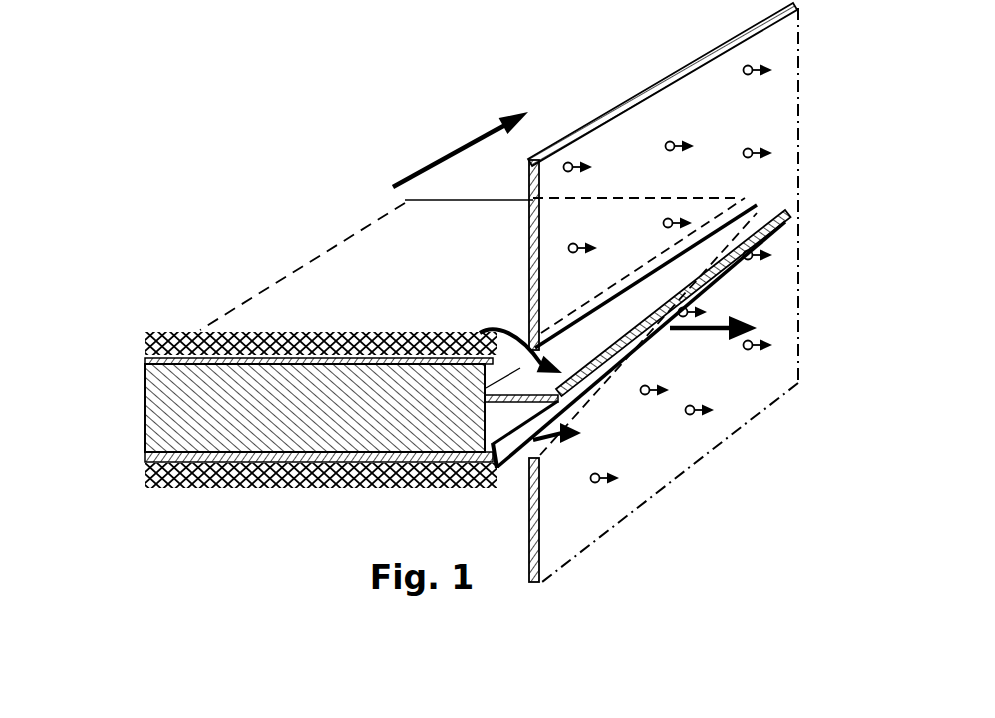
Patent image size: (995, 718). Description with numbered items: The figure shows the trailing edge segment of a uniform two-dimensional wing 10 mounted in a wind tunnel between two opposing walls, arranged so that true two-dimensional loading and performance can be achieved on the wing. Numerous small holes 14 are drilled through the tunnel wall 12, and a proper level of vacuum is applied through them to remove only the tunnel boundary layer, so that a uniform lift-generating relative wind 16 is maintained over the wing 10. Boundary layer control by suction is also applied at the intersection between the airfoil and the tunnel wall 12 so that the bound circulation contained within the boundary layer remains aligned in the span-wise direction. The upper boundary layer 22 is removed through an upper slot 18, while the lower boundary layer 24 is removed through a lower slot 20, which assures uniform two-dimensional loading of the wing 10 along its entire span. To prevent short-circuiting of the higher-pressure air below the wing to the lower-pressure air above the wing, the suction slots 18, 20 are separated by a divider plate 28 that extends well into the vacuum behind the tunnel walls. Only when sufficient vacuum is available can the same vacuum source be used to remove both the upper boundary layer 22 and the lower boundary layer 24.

The 2-D wing 10 is at (147, 397).
The tunnel wall 12 is at (666, 476).
The small holes 14 is at (728, 411).
The relative wind 16 is at (416, 170).
The upper slot 18 is at (517, 337).
The lower slot 20 is at (522, 487).
The upper boundary layer 22 is at (147, 352).
The lower boundary layer 24 is at (173, 482).
The divider plate 28 is at (782, 213).